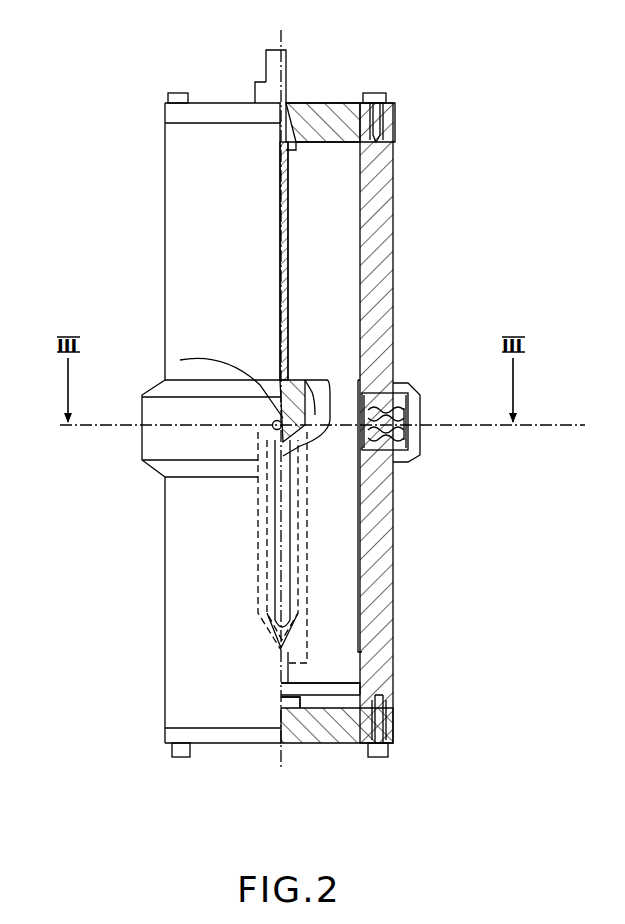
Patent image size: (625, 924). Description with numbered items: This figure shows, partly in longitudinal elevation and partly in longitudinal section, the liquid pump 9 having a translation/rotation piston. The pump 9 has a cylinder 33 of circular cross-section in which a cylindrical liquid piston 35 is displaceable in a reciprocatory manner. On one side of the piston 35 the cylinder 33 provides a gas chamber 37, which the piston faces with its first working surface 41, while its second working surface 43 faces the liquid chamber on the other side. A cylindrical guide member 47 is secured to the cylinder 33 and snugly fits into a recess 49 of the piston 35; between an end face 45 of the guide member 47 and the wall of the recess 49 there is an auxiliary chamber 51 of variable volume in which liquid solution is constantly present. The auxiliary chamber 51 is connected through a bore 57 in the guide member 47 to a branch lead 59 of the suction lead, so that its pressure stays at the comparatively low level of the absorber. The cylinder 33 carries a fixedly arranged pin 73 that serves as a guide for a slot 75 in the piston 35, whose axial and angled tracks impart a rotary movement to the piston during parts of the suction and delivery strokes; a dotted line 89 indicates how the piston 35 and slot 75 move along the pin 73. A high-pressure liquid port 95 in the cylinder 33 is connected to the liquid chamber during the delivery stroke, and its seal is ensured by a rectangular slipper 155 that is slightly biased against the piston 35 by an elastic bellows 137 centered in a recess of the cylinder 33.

The pump 9 is at (133, 132).
The branch lead 59 is at (277, 32).
The bore 57 is at (280, 207).
The guide member 47 is at (295, 376).
The cylinder 33 is at (383, 279).
The end face 45 is at (180, 362).
The pin 73 is at (272, 421).
The second working surface 43 is at (326, 378).
The slipper 155 is at (390, 386).
The bellows 137 is at (395, 405).
The high-pressure liquid port 95 is at (423, 429).
The dotted line 89 is at (340, 473).
The recess 49 is at (340, 521).
The slot 75 is at (305, 562).
The auxiliary chamber 51 is at (286, 650).
The liquid piston 35 is at (342, 660).
The first working surface 41 is at (300, 735).
The gas chamber 37 is at (334, 707).